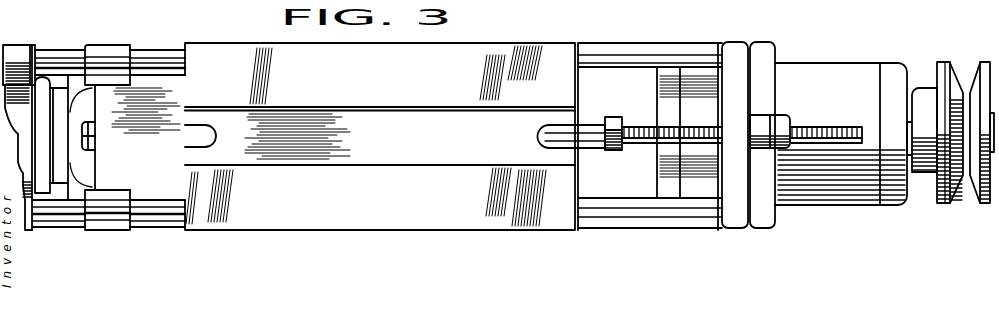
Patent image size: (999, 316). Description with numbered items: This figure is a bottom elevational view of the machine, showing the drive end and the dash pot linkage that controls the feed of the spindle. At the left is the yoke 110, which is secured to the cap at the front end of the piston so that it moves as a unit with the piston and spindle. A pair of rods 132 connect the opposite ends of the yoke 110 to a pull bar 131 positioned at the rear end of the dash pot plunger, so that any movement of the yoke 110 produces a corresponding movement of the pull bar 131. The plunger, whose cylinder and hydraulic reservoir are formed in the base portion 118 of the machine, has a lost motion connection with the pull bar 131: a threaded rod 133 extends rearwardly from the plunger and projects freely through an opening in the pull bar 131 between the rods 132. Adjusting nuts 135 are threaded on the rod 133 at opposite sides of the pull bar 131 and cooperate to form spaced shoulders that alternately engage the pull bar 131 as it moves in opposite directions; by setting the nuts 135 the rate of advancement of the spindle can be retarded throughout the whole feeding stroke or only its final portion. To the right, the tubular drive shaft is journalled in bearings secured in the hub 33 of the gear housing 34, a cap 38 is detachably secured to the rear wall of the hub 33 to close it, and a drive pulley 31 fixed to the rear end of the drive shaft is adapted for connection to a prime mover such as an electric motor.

The yoke 110 is at (14, 54).
The base portion 118 is at (220, 3).
The rods 132 is at (597, 55).
The threaded rod 133 is at (632, 125).
The adjusting nuts 135 is at (622, 152).
The pull bar 131 is at (730, 53).
The gear housing 34 is at (768, 52).
The hub 33 is at (850, 70).
The cap 38 is at (890, 70).
The drive pulley 31 is at (955, 77).